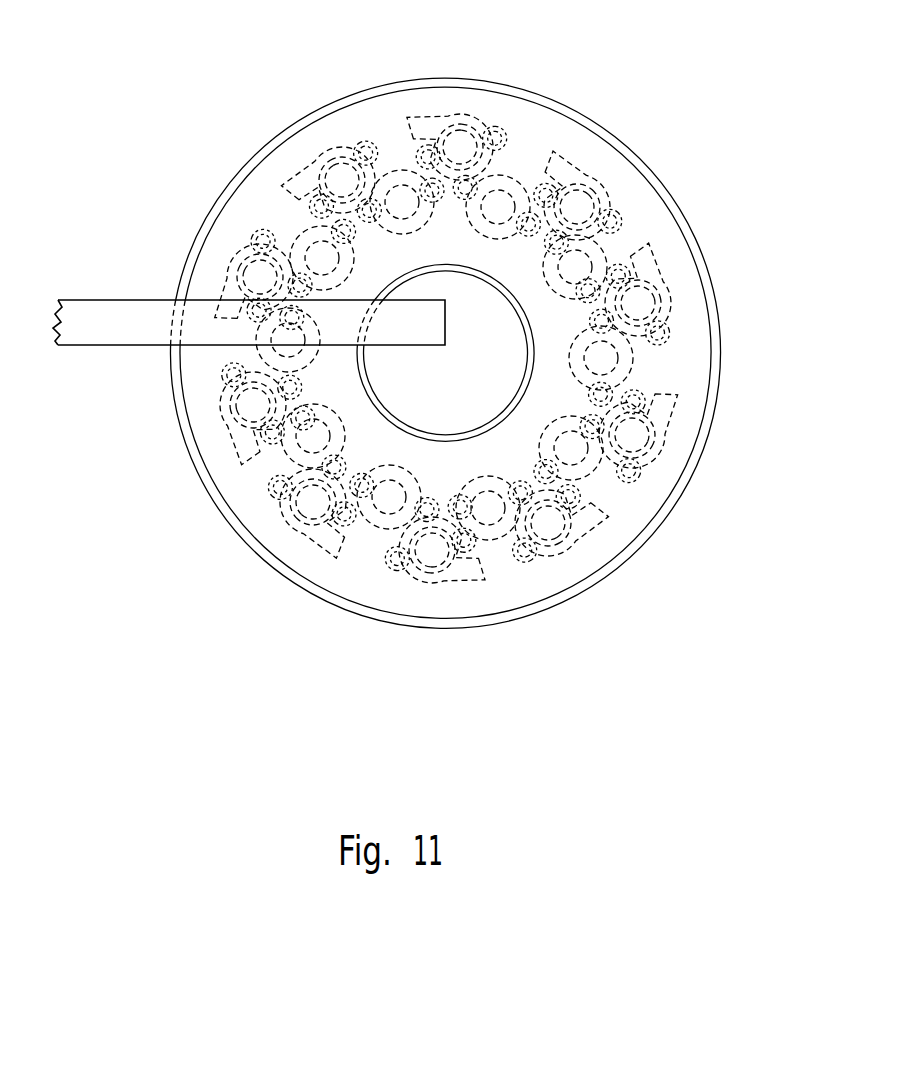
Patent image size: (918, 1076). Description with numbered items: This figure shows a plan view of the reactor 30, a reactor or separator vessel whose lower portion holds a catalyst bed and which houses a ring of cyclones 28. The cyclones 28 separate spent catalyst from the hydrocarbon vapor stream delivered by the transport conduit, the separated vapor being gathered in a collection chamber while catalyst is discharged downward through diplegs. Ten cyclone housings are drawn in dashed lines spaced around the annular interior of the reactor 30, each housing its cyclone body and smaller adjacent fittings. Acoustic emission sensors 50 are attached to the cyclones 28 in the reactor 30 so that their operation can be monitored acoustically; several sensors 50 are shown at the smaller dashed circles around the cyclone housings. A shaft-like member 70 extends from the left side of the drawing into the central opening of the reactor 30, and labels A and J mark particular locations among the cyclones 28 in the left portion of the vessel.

The cyclone 28 is at (657, 265).
The reactor vessel 30 is at (353, 612).
The acoustic emission sensor 50 is at (478, 190).
The shaft 70 is at (122, 300).
The region A is at (255, 277).
The region J is at (243, 410).